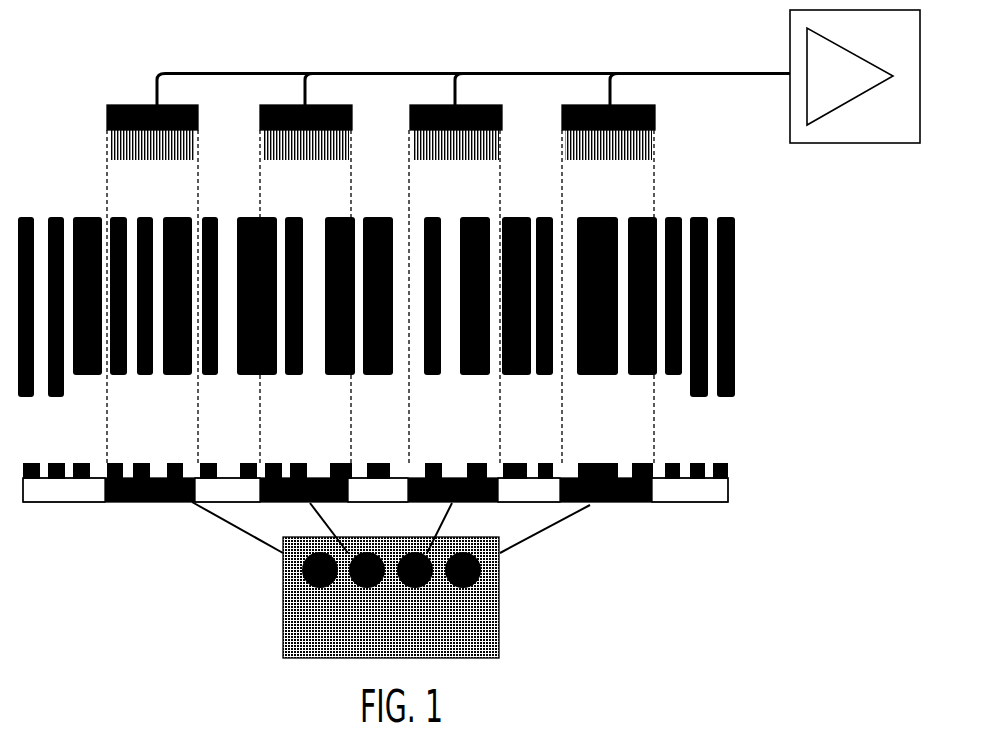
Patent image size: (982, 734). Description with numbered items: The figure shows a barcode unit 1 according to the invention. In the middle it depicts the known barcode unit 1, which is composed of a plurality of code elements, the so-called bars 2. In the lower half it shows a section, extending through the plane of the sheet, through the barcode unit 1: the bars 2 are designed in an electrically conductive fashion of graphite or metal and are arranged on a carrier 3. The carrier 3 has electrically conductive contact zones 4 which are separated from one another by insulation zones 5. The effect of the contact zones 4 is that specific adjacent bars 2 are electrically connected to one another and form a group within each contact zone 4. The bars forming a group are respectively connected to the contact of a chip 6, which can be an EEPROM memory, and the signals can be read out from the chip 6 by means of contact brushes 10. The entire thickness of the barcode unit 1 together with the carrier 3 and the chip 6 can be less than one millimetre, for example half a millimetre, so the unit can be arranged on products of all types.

The barcode unit 1 is at (736, 311).
The bars 2 is at (693, 467).
The carrier 3 is at (730, 492).
The contact zones 4 is at (280, 503).
The insulation zones 5 is at (537, 495).
The chip 6 is at (499, 615).
The contact brushes 10 is at (290, 103).